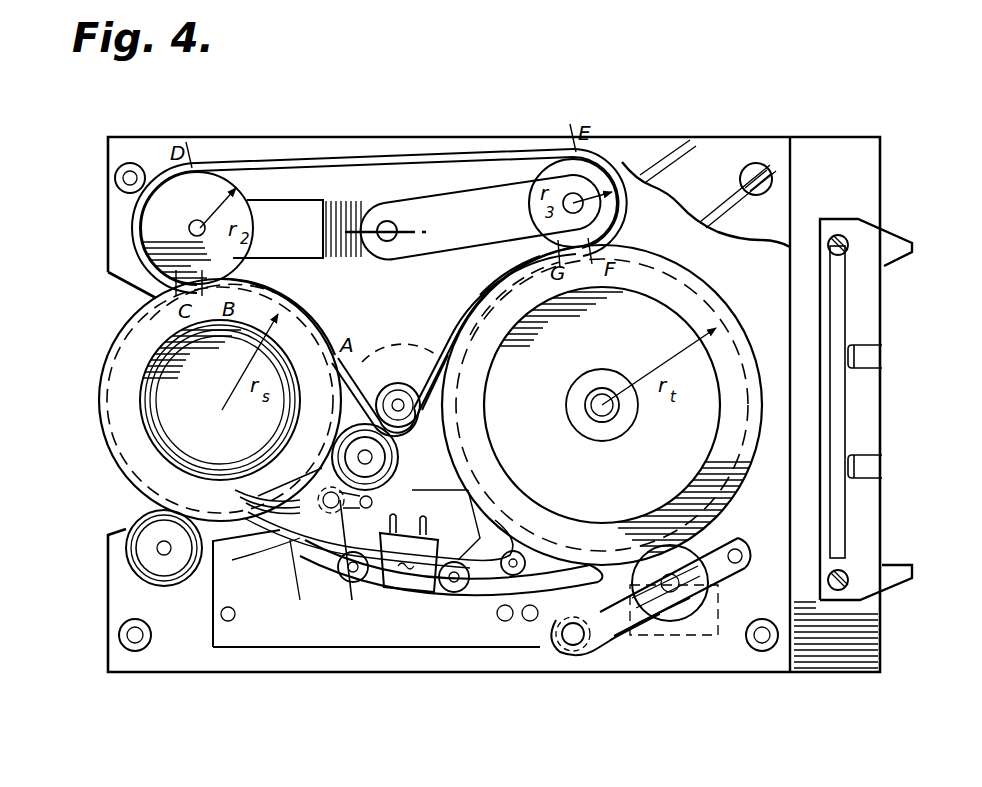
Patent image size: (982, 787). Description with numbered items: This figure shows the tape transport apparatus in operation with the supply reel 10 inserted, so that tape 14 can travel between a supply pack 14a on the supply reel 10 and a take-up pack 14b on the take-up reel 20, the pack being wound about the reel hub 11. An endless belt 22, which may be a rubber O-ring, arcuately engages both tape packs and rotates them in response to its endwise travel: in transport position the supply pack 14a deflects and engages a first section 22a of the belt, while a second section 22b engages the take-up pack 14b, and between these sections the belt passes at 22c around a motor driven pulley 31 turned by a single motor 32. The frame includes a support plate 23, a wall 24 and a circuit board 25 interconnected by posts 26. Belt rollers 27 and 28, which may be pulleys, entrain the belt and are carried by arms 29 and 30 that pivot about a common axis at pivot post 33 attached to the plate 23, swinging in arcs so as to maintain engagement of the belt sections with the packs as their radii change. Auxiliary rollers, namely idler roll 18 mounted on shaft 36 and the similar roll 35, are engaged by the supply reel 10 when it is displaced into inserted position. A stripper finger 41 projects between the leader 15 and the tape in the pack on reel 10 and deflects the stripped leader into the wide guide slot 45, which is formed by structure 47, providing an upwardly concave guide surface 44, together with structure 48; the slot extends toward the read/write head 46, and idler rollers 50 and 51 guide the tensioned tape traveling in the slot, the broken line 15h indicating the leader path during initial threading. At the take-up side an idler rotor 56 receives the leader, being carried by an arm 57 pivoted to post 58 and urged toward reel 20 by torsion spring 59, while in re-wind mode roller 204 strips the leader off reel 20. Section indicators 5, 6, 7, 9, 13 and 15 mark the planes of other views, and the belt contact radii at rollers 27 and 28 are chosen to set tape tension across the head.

The section line 5- 5 is at (86, 404).
The section line 6- 6 is at (184, 498).
The section line 7- 7 is at (627, 520).
The section line 9- 9 is at (566, 128).
The supply reel 10 is at (106, 343).
The supply reel hub 11 is at (218, 410).
The section line 13- 13 is at (533, 660).
The tape 14 is at (368, 600).
The supply roll or pack 14a is at (275, 300).
The take-up roll or pack 14b is at (486, 304).
The leader 15 is at (193, 75).
The leader path 15h is at (262, 582).
The idler roll 18 is at (125, 552).
The take-up reel 20 is at (736, 304).
The endless belt 22 is at (434, 158).
The first section of the belt 22a is at (305, 312).
The second section of the belt 22b is at (505, 282).
The belt portion at the pulley 22c is at (446, 414).
The support plate 23 is at (150, 662).
The wall 24 is at (712, 146).
The circuit board 25 is at (856, 655).
The posts 26 is at (118, 636).
The belt roller 27 is at (204, 185).
The belt roller 28 is at (590, 185).
The arm 29 is at (278, 210).
The second arm 30 is at (474, 200).
The motor driven pulley 31 is at (398, 400).
The single motor 32 is at (402, 352).
The pivot post 33 is at (383, 222).
The roll 35 is at (400, 468).
The shaft 36 is at (160, 546).
The stripper finger 41 is at (264, 560).
The guide surface 44 is at (400, 606).
The guide slot 45 is at (282, 575).
The read/write head 46 is at (430, 541).
The structure 47 is at (275, 640).
The structure 48 is at (318, 560).
The idler roller 50 is at (353, 552).
The idler roller 51 is at (454, 562).
The idler rotor 56 is at (682, 622).
The arm 57 is at (638, 632).
The post 58 is at (572, 648).
The torsion spring 59 is at (622, 640).
The roller 204 is at (516, 550).